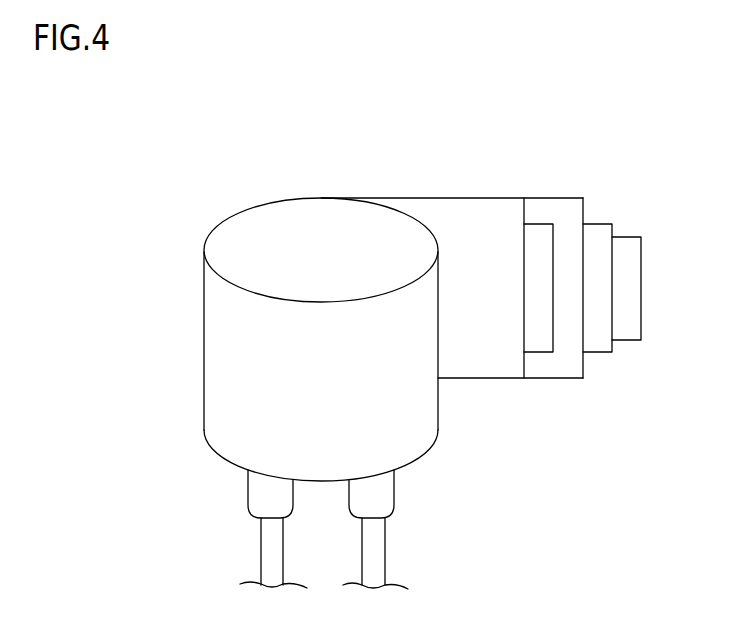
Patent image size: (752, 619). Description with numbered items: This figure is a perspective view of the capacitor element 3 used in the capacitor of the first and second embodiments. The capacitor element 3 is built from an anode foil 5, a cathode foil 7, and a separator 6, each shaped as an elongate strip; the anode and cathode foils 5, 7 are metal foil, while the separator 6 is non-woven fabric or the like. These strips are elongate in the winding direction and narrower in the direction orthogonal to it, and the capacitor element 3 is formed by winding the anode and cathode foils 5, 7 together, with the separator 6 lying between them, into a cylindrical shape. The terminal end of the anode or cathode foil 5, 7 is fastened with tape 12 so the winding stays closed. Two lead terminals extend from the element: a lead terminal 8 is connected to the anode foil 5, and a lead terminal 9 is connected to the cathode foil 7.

The capacitor element 3 is at (422, 187).
The anode foil 5 is at (542, 338).
The separator 6 is at (500, 362).
The cathode foil 7 is at (595, 341).
The lead terminal 8 is at (262, 502).
The lead terminal 9 is at (382, 503).
The tape 12 is at (618, 261).